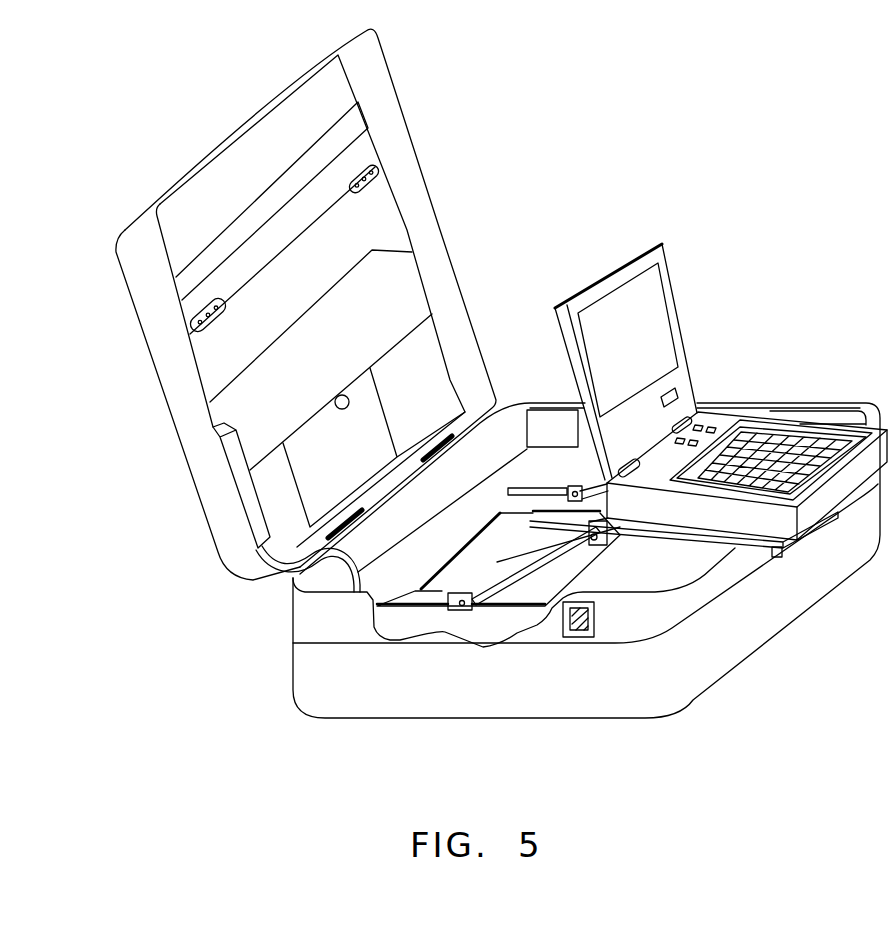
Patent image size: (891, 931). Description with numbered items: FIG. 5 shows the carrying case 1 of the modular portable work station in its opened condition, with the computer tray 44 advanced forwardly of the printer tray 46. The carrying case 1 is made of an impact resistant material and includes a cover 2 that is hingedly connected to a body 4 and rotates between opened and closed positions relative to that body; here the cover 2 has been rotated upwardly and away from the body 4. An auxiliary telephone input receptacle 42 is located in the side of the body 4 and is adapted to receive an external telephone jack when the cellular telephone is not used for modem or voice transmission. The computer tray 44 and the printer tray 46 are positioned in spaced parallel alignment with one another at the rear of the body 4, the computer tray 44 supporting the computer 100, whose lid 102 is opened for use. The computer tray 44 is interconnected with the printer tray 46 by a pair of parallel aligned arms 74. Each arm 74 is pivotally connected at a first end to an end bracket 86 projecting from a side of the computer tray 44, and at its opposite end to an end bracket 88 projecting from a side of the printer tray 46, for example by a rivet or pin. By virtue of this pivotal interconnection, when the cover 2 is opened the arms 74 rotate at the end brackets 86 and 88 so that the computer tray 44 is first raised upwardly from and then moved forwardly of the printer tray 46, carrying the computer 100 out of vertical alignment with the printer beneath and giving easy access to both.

The carrying case 1 is at (233, 620).
The cover 2 is at (172, 413).
The body 4 is at (443, 714).
The auxiliary telephone input receptacle 42 is at (588, 635).
The computer tray 44 is at (674, 535).
The printer tray 46 is at (577, 543).
The arms 74 is at (580, 487).
The end brackets 86 is at (590, 537).
The end brackets 88 is at (508, 497).
The computer 100 is at (735, 422).
The lid 102 is at (677, 330).